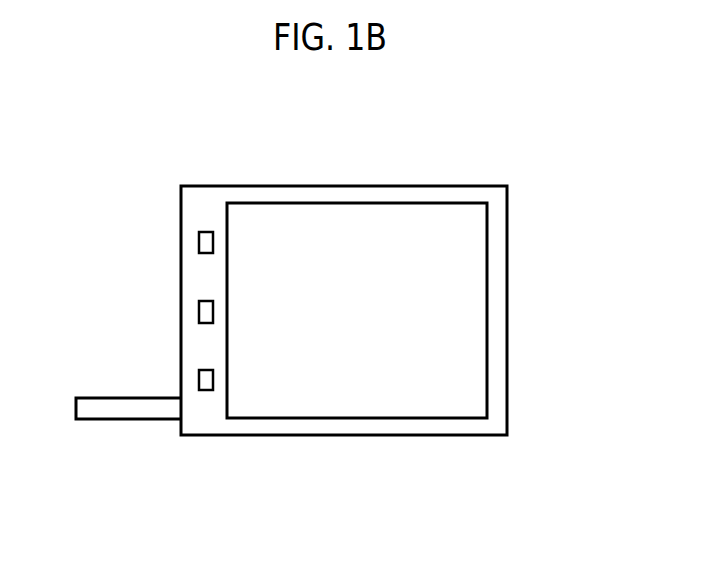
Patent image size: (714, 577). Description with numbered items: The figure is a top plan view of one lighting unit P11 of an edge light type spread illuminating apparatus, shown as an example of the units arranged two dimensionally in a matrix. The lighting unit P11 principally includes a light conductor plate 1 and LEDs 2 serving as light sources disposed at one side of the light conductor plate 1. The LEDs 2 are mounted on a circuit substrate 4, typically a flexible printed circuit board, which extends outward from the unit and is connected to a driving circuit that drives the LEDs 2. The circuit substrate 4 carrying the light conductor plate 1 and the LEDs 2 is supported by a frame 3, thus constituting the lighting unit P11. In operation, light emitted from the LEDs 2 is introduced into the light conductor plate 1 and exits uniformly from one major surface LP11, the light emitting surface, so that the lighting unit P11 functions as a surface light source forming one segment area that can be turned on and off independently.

The light conductor plate 1 is at (442, 204).
The LEDs 2 is at (199, 238).
The frame 3 is at (498, 338).
The circuit substrate 4 is at (136, 413).
The light emitting surface LP11 is at (288, 228).
The lighting unit P11 is at (368, 436).